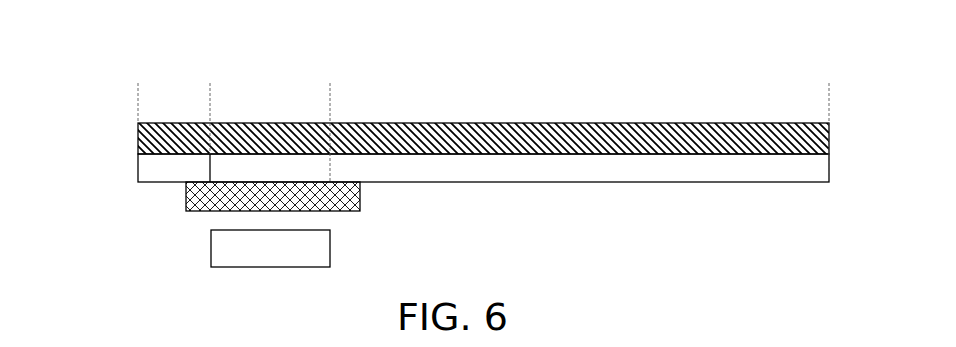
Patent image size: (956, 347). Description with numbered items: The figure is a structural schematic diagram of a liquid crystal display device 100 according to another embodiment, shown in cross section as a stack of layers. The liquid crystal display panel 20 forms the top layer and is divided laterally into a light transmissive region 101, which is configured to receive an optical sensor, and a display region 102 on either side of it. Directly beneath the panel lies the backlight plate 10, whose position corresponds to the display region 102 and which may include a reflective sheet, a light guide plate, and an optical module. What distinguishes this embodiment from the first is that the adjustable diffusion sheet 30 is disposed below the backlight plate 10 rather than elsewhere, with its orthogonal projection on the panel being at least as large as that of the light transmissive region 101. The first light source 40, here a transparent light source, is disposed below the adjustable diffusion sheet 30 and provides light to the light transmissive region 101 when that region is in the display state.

The liquid crystal display device 100 is at (98, 49).
The backlight plate 10 is at (138, 172).
The liquid crystal display panel 20 is at (138, 133).
The adjustable diffusion sheet 30 is at (186, 195).
The first light source 40 is at (330, 258).
The light transmissive region 101 is at (330, 97).
The display region 102 is at (829, 97).